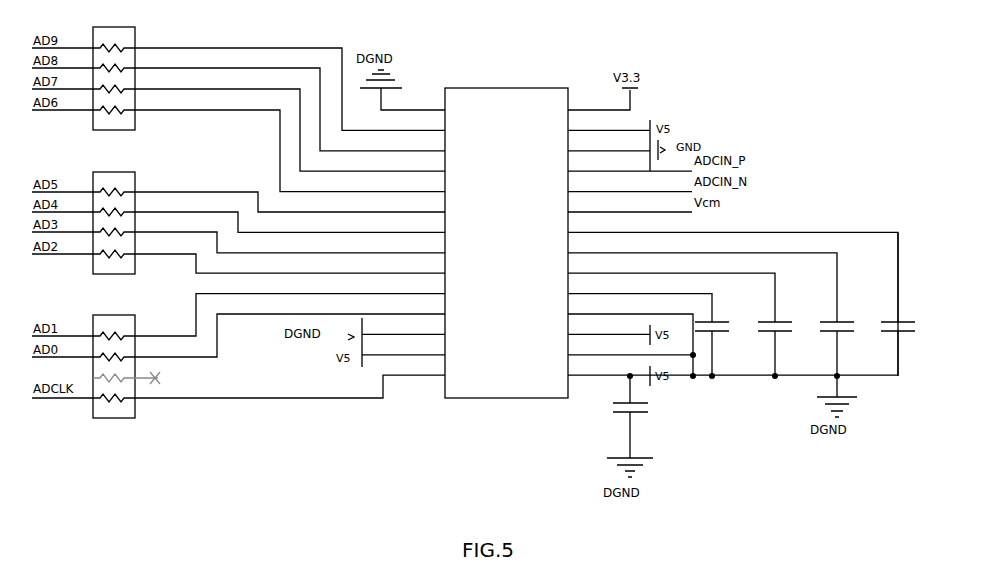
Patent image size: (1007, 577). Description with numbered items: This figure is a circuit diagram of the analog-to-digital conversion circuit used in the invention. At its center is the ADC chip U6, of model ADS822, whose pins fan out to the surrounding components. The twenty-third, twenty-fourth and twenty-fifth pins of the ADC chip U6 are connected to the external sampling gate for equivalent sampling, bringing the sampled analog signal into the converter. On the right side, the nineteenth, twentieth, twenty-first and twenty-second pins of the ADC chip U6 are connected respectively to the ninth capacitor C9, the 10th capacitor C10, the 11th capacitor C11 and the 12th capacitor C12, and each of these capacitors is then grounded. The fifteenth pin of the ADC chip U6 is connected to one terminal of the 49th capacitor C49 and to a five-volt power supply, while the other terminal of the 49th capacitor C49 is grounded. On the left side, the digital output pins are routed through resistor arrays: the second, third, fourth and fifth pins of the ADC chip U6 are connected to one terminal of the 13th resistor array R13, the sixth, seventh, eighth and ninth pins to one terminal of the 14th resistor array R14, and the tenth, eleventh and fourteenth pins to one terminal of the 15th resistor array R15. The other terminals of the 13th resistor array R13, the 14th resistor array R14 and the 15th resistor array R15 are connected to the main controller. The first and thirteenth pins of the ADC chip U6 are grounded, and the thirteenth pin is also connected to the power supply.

The 13th resistor array R13 is at (114, 71).
The 14th resistor array R14 is at (114, 216).
The 15th resistor array R15 is at (126, 359).
The ADC chip U6 is at (507, 244).
The ninth capacitor C9 is at (702, 324).
The 10th capacitor C10 is at (737, 314).
The 11th capacitor C11 is at (912, 304).
The 12th capacitor C12 is at (675, 335).
The 49th capacitor C49 is at (644, 417).